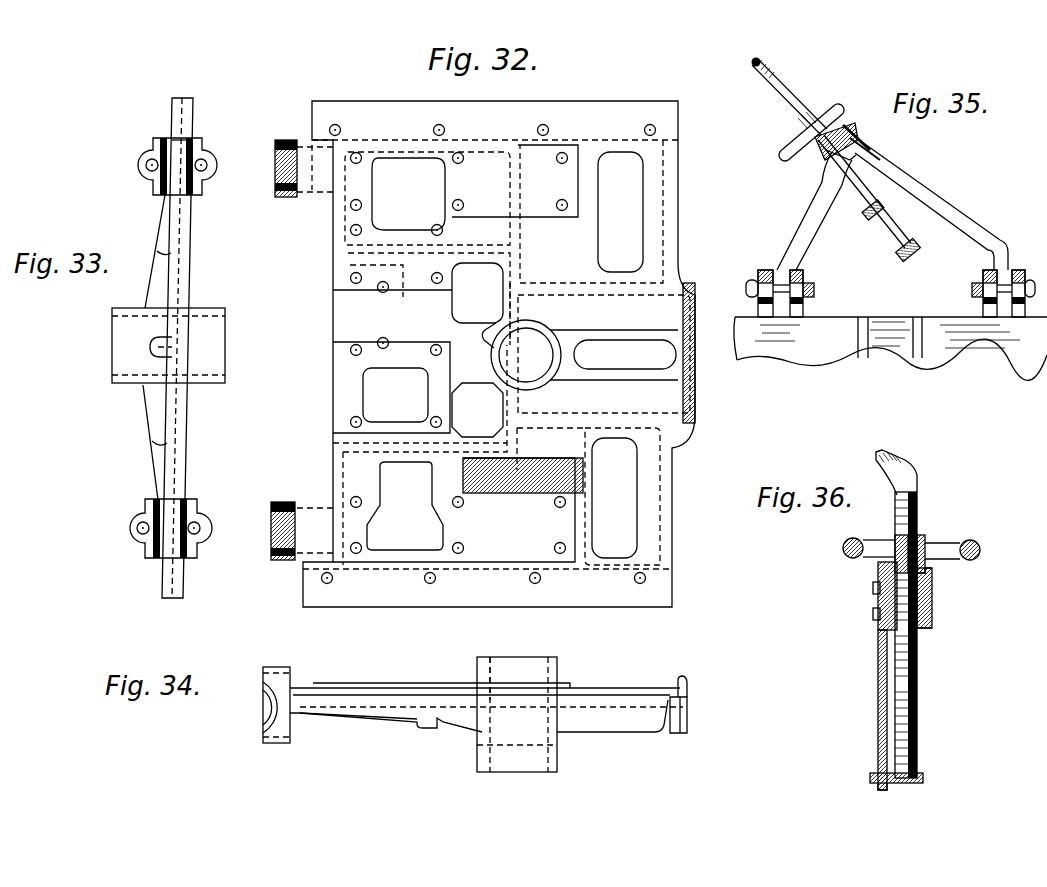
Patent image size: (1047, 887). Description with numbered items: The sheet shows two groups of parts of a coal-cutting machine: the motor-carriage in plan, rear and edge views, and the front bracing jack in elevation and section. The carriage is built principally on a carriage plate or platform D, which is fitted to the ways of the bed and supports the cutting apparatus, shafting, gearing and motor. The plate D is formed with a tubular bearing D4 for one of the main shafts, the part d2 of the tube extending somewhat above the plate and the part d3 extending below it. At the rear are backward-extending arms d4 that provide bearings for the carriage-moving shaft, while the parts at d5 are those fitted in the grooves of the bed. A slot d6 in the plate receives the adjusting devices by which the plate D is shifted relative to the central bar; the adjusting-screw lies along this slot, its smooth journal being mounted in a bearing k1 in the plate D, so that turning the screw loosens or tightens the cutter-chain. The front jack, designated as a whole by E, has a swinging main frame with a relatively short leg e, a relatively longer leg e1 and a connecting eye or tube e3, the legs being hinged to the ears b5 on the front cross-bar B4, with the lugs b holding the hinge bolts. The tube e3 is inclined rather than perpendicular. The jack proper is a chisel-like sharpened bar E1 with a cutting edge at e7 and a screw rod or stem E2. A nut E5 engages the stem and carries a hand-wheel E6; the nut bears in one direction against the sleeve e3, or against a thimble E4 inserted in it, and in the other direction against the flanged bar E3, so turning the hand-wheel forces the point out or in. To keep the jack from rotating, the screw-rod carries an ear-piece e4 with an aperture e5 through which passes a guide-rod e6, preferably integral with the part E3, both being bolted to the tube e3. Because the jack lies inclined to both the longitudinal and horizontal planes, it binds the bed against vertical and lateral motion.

In FIG. 32, the carriage plate or platform D is at (496, 354).
In FIG. 33, the carriage plate or platform D is at (189, 348).
In FIG. 34, the carriage plate or platform D is at (486, 699).
In FIG. 32, the tubular bearing D4 is at (580, 355).
In FIG. 33, the tubular bearing D4 is at (216, 356).
In FIG. 34, the tubular bearing D4 is at (521, 666).
In FIG. 33, the upper part of the tube d2 is at (208, 386).
In FIG. 34, the upper part of the tube d2 is at (497, 664).
In FIG. 33, the lower part of the tube d3 is at (124, 386).
In FIG. 34, the lower part of the tube d3 is at (488, 753).
In FIG. 32, the backward-extending arms d4 is at (322, 193).
In FIG. 34, the backward-extending arms d4 is at (292, 713).
In FIG. 32, the guide parts d5 is at (489, 352).
In FIG. 33, the guide parts d5 is at (195, 120).
In FIG. 34, the guide parts d5 is at (361, 709).
In FIG. 32, the slot d6 is at (625, 354).
In FIG. 32, the bearing k1 is at (697, 362).
In FIG. 34, the bearing k1 is at (688, 683).
In FIG. 35, the front cross-bar B4 is at (890, 348).
In FIG. 35, the lug b is at (985, 307).
In FIG. 35, the ears b5 is at (801, 291).
In FIG. 35, the short leg e is at (797, 225).
In FIG. 35, the long leg e1 is at (948, 222).
In FIG. 35, the front jack E is at (869, 143).
In FIG. 36, the front jack E is at (941, 596).
In FIG. 35, the sharpened bar E1 is at (789, 97).
In FIG. 36, the sharpened bar E1 is at (880, 472).
In FIG. 35, the screw rod or stem E2 is at (868, 191).
In FIG. 36, the screw rod or stem E2 is at (917, 685).
In FIG. 36, the flanged bar E3 is at (880, 567).
In FIG. 36, the thimble E4 is at (932, 626).
In FIG. 36, the nut E5 is at (925, 541).
In FIG. 35, the hand-wheel E6 is at (838, 110).
In FIG. 36, the hand-wheel E6 is at (983, 554).
In FIG. 35, the connecting eye or tube e3 is at (856, 142).
In FIG. 36, the connecting eye or tube e3 is at (935, 591).
In FIG. 35, the ear-piece e4 is at (901, 256).
In FIG. 36, the ear-piece e4 is at (925, 779).
In FIG. 36, the aperture e5 is at (879, 790).
In FIG. 35, the guide-rod e6 is at (879, 225).
In FIG. 36, the guide-rod e6 is at (878, 685).
In FIG. 35, the cutting edge e7 is at (751, 65).
In FIG. 36, the cutting edge e7 is at (885, 441).